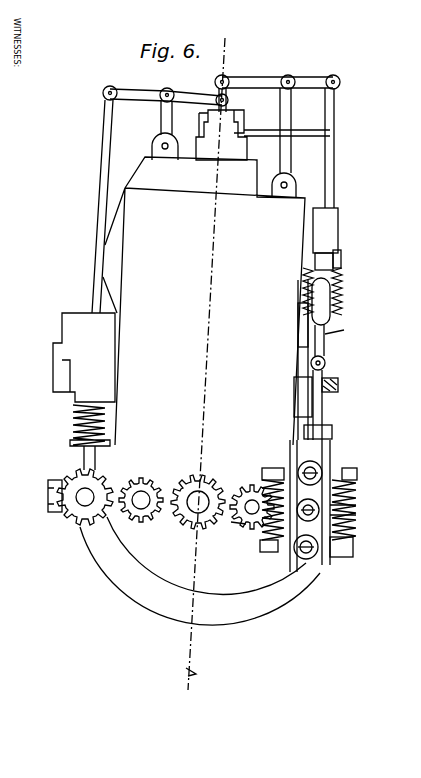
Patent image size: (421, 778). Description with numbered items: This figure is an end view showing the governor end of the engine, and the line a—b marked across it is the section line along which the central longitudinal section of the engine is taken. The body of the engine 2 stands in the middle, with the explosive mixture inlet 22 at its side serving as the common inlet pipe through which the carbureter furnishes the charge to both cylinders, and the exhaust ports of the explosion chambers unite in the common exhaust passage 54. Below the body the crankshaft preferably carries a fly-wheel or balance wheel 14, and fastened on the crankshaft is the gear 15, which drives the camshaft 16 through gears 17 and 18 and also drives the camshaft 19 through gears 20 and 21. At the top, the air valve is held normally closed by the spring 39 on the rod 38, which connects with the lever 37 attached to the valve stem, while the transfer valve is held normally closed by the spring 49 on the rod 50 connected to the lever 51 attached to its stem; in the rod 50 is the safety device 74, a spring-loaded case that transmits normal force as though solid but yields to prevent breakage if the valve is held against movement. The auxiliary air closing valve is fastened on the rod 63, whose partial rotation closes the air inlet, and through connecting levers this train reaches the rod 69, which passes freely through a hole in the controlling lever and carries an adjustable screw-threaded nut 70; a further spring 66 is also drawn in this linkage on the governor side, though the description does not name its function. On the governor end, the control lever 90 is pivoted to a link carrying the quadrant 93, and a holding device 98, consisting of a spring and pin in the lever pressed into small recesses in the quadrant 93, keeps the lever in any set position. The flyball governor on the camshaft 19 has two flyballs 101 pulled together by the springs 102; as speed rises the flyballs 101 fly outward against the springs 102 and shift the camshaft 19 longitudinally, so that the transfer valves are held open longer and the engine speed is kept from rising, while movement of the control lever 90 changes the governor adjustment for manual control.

The section line a—b a is at (206, 355).
The section line a— b is at (189, 678).
The body casing 2 is at (196, 271).
The fly-wheel 14 is at (95, 537).
The gear 15 is at (198, 478).
The camshaft 16 is at (48, 507).
The gear 17 is at (160, 482).
The gear 18 is at (78, 478).
The camshaft 19 is at (348, 513).
The gear 20 is at (247, 521).
The gear 21 is at (351, 547).
The explosive mixture inlet 22 is at (55, 374).
The lever 37 is at (162, 92).
The rod 38 is at (100, 153).
The spring 39 is at (76, 427).
The spring 49 is at (331, 435).
The rod 50 is at (329, 160).
The lever 51 is at (271, 66).
The common exhaust passage 54 is at (334, 337).
The rod 63 is at (279, 108).
The spring 66 is at (341, 289).
The rod 69 is at (326, 365).
The nut 70 is at (323, 360).
The safety device 74 is at (325, 230).
The control lever 90 is at (328, 313).
The quadrant 93 is at (296, 402).
The holding device 98 is at (338, 388).
The flyballs 101 is at (322, 470).
The springs 102 is at (262, 485).